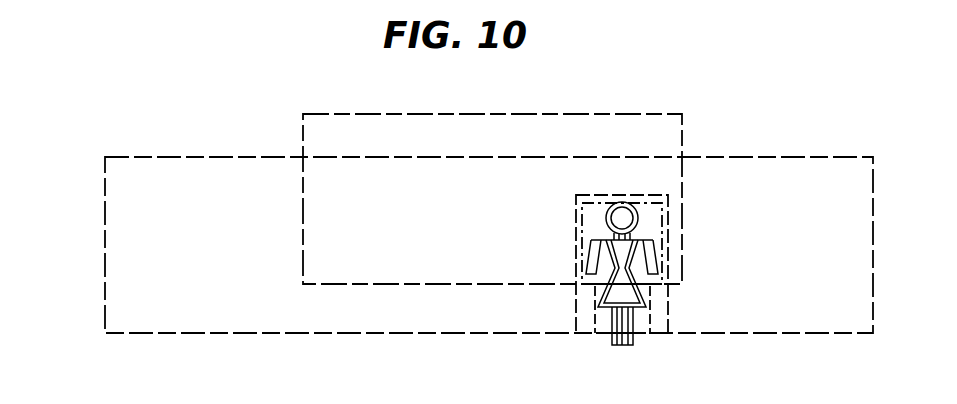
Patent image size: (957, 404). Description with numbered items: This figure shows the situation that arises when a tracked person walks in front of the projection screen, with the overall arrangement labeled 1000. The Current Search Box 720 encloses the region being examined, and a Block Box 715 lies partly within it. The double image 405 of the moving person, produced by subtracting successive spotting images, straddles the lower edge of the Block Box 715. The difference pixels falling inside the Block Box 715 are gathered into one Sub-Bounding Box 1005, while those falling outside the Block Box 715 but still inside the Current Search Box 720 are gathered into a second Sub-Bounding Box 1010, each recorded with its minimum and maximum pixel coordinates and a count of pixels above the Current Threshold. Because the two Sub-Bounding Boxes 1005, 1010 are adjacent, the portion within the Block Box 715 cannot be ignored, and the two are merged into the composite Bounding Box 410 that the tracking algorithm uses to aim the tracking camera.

The search configuration diagram 1000 is at (137, 56).
The current search box 720 is at (805, 157).
The Block Box 715 is at (628, 113).
The Bounding Box 410 is at (587, 199).
The Sub-Bounding Box 1005 is at (577, 238).
The Sub-Bounding Box 1010 is at (650, 315).
The double image 405 is at (657, 250).